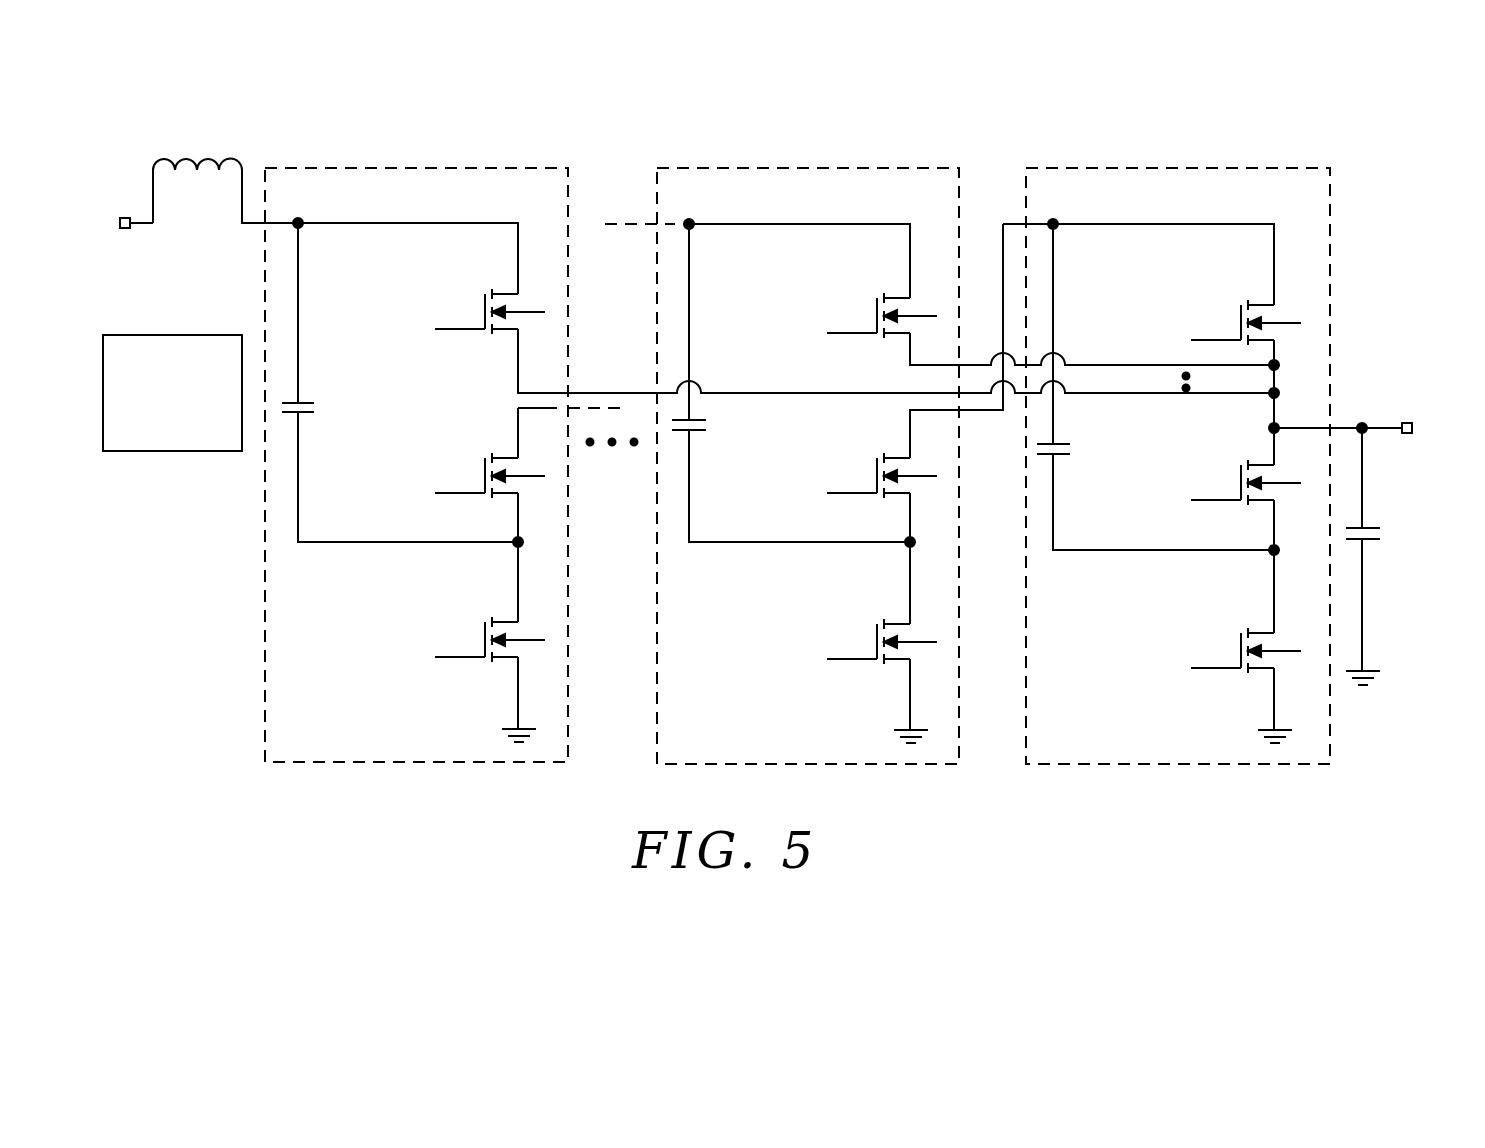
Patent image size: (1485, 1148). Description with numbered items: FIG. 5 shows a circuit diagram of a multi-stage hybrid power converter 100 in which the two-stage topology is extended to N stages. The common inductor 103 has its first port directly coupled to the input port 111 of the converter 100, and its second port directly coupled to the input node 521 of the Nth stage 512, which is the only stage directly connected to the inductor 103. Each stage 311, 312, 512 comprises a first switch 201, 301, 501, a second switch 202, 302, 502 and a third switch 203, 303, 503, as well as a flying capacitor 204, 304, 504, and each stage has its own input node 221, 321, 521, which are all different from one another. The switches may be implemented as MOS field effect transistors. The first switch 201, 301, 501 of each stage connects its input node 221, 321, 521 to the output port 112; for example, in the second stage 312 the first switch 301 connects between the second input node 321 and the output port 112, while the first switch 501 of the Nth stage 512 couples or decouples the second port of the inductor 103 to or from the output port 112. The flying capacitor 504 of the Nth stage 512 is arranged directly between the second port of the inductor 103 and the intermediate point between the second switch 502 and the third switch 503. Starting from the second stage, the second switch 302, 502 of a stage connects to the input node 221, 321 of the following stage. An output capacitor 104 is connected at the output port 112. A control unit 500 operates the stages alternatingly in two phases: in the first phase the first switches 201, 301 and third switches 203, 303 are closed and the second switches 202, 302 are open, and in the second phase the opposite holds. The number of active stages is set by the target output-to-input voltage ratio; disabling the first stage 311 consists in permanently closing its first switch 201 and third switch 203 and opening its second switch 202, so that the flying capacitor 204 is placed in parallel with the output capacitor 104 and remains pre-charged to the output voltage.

The power converter 100 is at (188, 664).
The input port 111 is at (125, 230).
The common inductor 103 is at (200, 210).
The input node of the Nth stage 521 is at (308, 236).
The first switch of the Nth stage 501 is at (500, 292).
The second switch of the Nth stage 502 is at (500, 450).
The third switch of the Nth stage 503 is at (500, 614).
The flying capacitor of the Nth stage 504 is at (318, 407).
The control unit 500 is at (172, 452).
The Nth stage 512 is at (345, 764).
The input node of the second stage 321 is at (700, 236).
The switch M4 301 is at (892, 292).
The switch M5 302 is at (892, 450).
The switch M6 303 is at (892, 614).
The flying capacitor of the second stage 304 is at (710, 425).
The second stage 312 is at (738, 766).
The input node of the first stage 221 is at (1063, 236).
The switch M1 201 is at (1257, 292).
The switch M2 202 is at (1257, 456).
The switch M3 203 is at (1257, 620).
The flying capacitor of the first stage 204 is at (1073, 448).
The first stage 311 is at (1108, 768).
The output port 112 is at (1407, 440).
The output capacitor 104 is at (1382, 550).